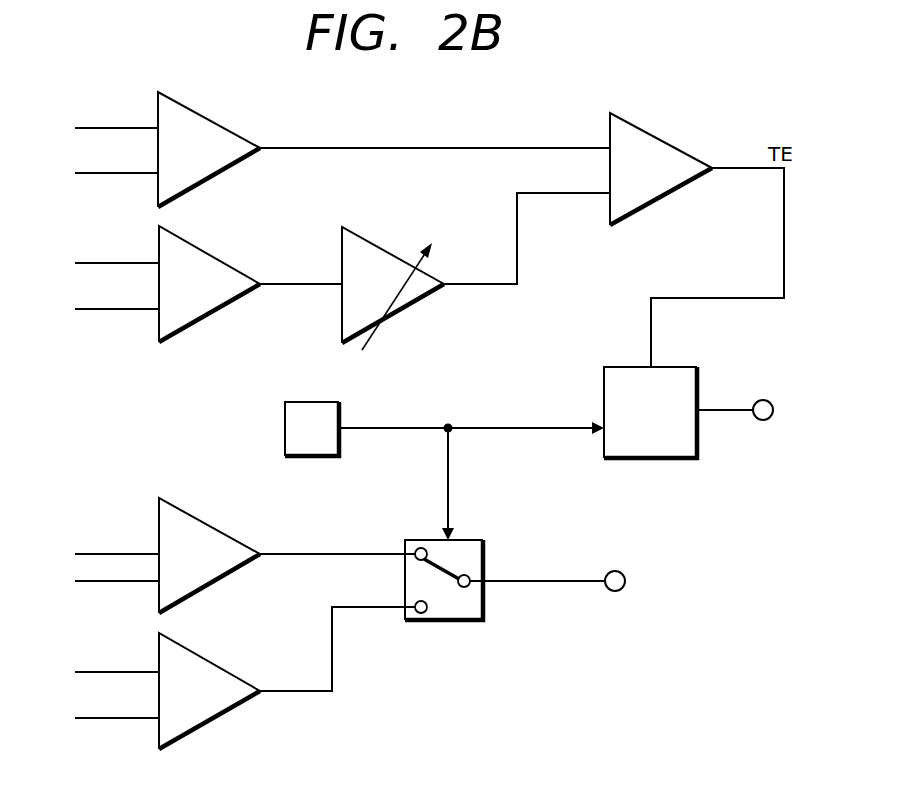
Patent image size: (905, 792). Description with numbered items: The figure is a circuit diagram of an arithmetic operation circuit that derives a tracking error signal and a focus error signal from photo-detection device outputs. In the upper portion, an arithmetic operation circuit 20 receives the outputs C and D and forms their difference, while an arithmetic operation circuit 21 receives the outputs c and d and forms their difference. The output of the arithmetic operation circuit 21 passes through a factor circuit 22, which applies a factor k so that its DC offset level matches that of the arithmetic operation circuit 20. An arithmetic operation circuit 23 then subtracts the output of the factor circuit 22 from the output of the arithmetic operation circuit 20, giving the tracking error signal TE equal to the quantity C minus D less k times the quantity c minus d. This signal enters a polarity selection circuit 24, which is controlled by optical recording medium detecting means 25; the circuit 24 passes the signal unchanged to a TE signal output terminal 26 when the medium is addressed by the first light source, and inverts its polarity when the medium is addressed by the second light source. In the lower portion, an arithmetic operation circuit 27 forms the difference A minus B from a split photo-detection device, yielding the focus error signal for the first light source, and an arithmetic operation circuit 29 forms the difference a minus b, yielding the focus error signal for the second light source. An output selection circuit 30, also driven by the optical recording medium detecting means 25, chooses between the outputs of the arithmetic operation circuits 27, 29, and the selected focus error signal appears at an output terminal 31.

The arithmetic operation circuit 20 is at (220, 120).
The arithmetic operation circuit 21 is at (220, 255).
The factor circuit 22 is at (368, 238).
The arithmetic operation circuit 23 is at (668, 142).
The polarity selection circuit 24 is at (690, 366).
The optical recording medium detecting means 25 is at (337, 402).
The TE signal output terminal 26 is at (773, 404).
The arithmetic operation circuit 27 is at (220, 527).
The arithmetic operation circuit 29 is at (220, 664).
The output selection circuit 30 is at (482, 540).
The output terminal 31 is at (625, 574).